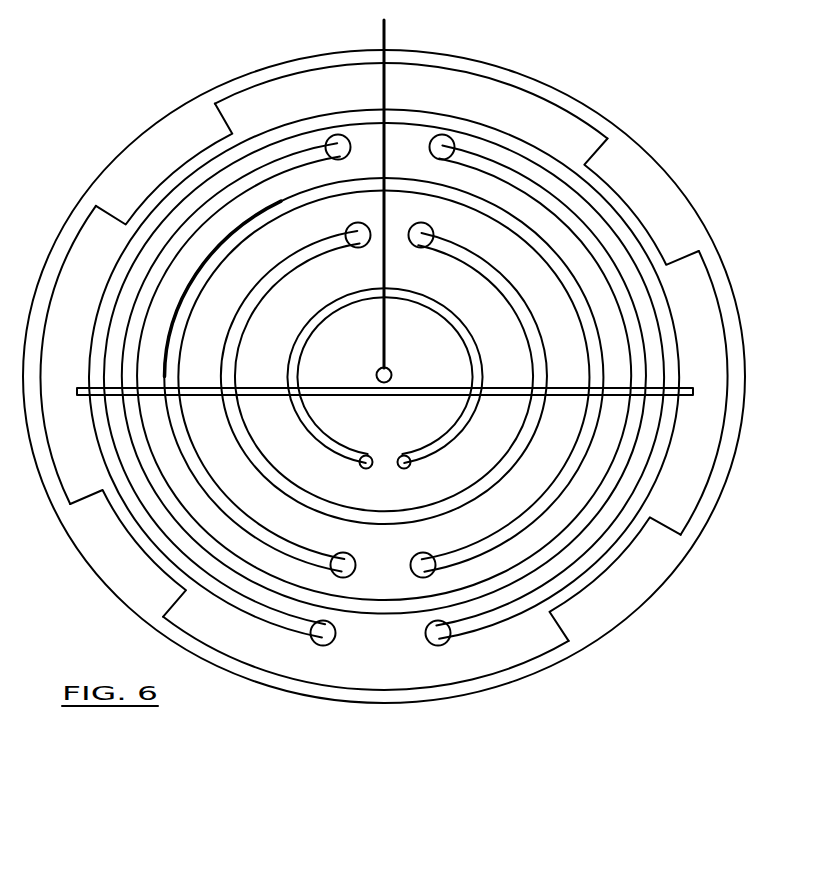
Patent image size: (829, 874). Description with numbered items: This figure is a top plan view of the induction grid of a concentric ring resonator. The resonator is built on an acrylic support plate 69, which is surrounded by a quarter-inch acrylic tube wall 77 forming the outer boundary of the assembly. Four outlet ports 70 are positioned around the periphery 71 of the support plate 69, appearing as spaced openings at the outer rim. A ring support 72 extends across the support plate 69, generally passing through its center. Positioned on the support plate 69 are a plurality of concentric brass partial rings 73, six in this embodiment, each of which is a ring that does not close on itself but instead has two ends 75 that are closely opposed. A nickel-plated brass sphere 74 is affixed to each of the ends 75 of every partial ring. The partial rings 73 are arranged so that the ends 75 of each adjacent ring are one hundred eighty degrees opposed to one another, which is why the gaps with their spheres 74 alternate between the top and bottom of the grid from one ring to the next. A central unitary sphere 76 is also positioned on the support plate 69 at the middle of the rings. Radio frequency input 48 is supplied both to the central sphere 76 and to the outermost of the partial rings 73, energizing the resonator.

The radio frequency input 48 is at (386, 86).
The acrylic support plate 69 is at (80, 473).
The outlet ports 70 is at (637, 185).
The periphery 71 is at (715, 282).
The ring support 72 is at (338, 387).
The concentric brass partial rings 73 is at (673, 372).
The nickel-plated brass sphere 74 is at (370, 468).
The ends 75 is at (357, 452).
The central unitary sphere 76 is at (397, 375).
The acrylic tube wall 77 is at (410, 698).